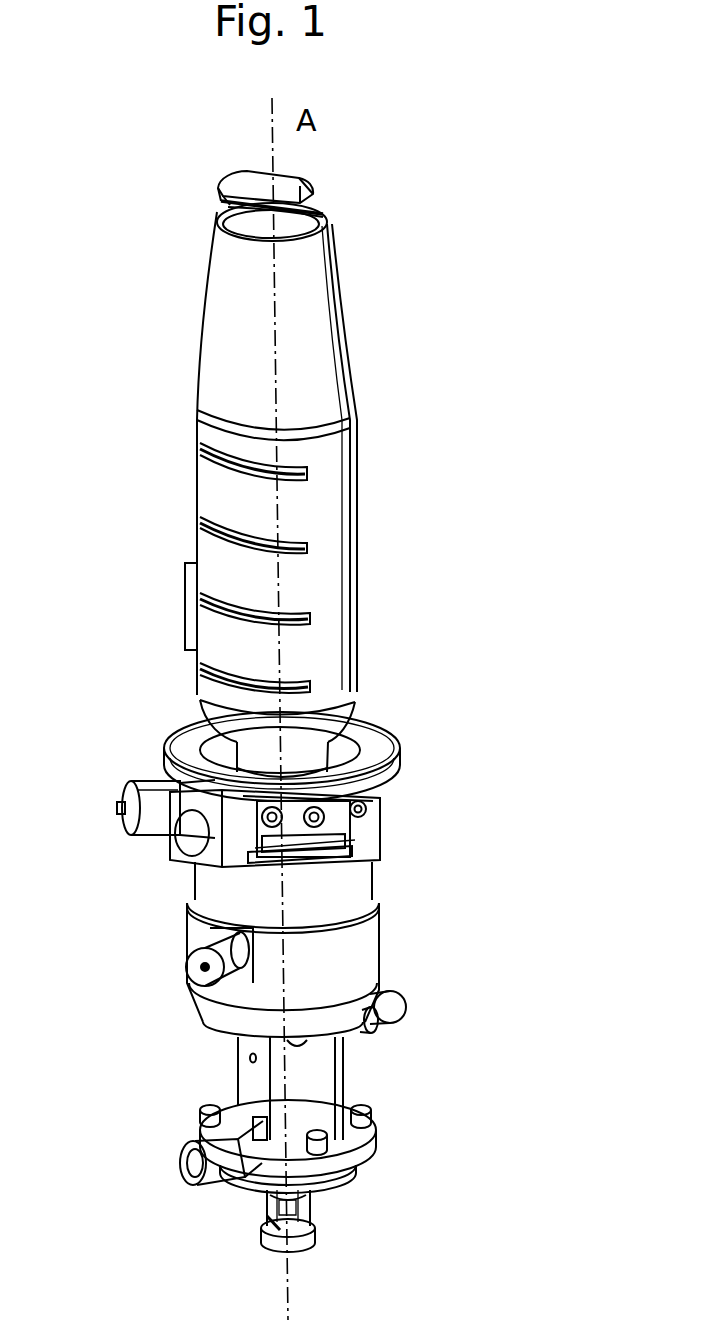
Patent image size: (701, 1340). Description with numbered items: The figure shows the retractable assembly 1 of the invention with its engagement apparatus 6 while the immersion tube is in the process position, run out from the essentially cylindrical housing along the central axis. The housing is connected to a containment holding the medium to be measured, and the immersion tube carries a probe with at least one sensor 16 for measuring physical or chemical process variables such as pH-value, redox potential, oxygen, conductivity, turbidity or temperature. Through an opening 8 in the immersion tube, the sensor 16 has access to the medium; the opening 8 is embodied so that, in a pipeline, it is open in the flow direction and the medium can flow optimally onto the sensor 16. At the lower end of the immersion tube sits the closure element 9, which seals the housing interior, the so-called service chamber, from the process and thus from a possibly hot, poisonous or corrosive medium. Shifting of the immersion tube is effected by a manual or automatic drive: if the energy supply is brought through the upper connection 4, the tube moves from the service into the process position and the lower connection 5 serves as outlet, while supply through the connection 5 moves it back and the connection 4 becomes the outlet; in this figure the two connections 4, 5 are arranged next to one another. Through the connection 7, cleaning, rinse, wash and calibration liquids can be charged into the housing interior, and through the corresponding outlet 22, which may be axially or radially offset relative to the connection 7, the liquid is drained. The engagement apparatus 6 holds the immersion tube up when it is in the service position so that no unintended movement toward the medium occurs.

The retractable assembly 1 is at (364, 946).
The upper connection 4 is at (375, 821).
The lower connection 5 is at (372, 850).
The engagement apparatus 6 is at (116, 784).
The connection 7 is at (170, 1162).
The opening 8 is at (263, 1220).
The closure element 9 is at (302, 1242).
The sensor 16 is at (298, 1211).
The outlet 22 is at (414, 1004).